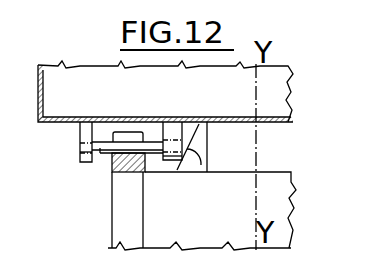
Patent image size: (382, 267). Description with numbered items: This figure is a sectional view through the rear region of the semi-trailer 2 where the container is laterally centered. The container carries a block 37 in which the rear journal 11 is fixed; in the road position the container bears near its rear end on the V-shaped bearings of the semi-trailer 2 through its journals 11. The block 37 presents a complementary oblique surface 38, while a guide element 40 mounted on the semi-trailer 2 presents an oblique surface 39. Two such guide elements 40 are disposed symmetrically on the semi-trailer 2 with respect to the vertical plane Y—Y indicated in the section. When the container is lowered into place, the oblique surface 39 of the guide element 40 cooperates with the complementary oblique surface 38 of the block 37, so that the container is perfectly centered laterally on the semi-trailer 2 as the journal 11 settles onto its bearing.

The semi-trailer 2 is at (244, 204).
The journal 11 is at (107, 154).
The block 37 is at (181, 126).
The complementary oblique surface 38 is at (197, 172).
The oblique surface 39 is at (190, 121).
The guide element 40 is at (199, 151).